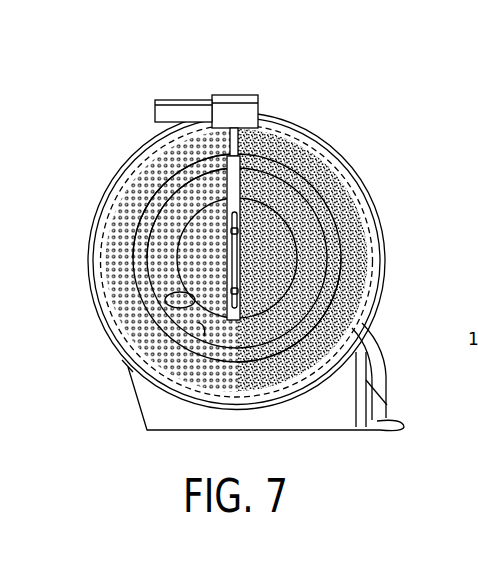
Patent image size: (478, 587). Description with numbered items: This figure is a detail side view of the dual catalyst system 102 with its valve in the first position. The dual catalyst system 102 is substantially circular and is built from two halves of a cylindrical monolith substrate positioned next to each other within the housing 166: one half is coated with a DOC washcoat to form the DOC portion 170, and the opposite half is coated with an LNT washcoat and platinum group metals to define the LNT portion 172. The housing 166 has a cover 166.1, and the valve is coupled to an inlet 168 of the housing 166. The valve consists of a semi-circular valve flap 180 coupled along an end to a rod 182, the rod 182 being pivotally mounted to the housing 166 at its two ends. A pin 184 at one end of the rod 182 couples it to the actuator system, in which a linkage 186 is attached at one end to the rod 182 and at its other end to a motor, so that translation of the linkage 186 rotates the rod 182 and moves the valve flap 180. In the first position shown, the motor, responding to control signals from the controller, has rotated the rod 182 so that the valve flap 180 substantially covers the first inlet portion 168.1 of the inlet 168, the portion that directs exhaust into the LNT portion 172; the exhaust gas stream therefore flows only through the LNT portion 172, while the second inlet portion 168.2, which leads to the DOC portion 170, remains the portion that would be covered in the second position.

The dual catalyst system 102 is at (378, 135).
The housing 166 is at (364, 178).
The cover 166.1 is at (163, 203).
The inlet 168 is at (198, 322).
The first inlet portion 168.1 is at (165, 303).
The second inlet portion 168.2 is at (331, 287).
The diesel oxidation catalyst portion 170 is at (97, 212).
The lean nitrogen oxide trap portion 172 is at (380, 226).
The valve flap 180 is at (190, 263).
The rod 182 is at (281, 142).
The pin 184 is at (232, 129).
The linkage 186 is at (178, 114).